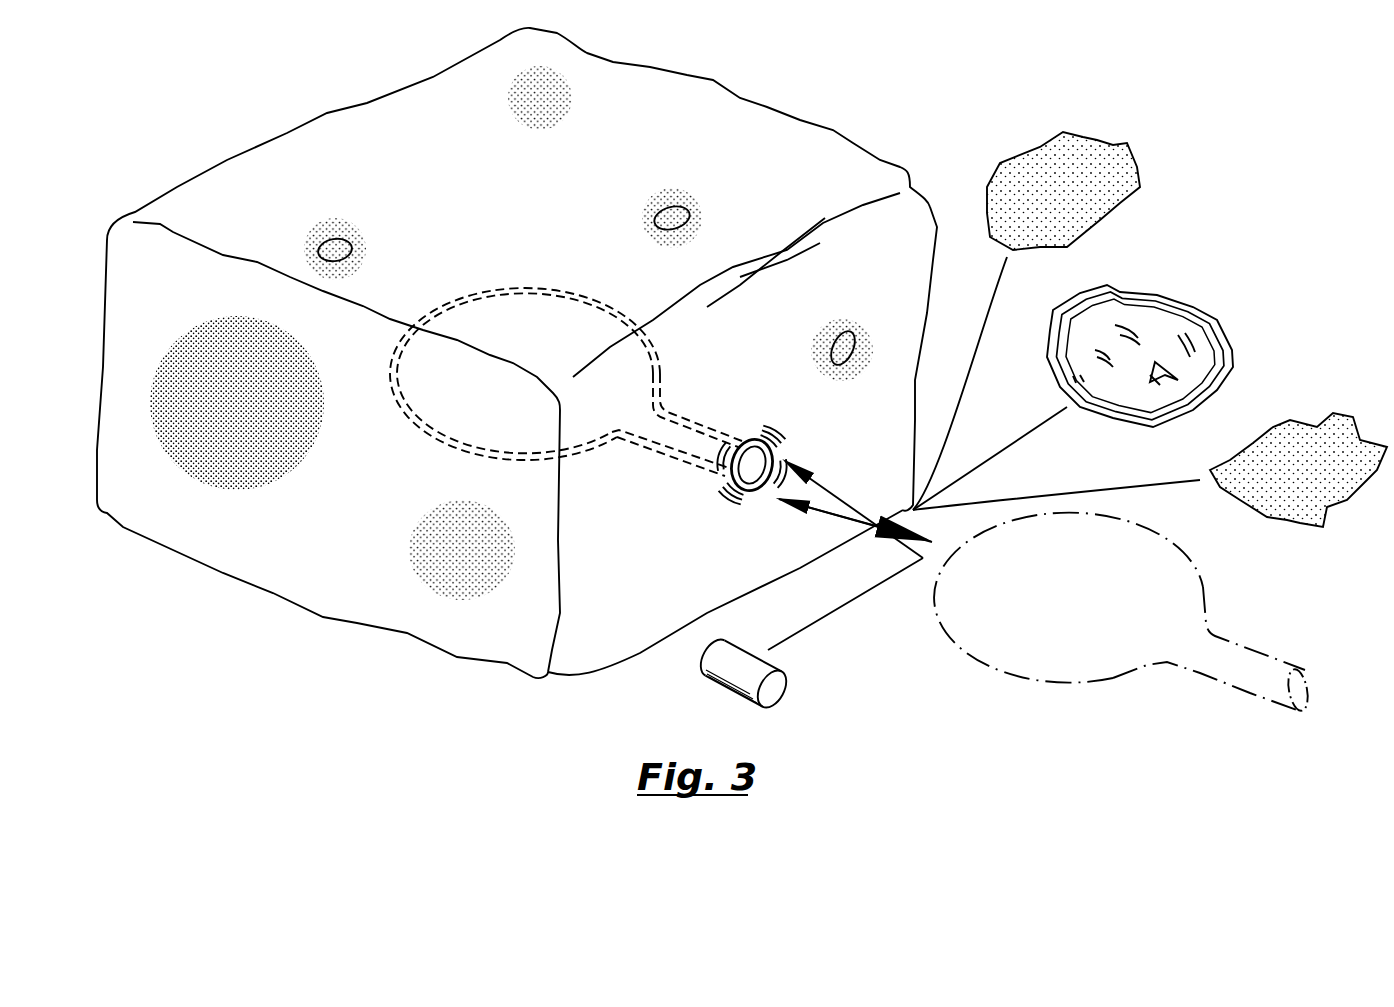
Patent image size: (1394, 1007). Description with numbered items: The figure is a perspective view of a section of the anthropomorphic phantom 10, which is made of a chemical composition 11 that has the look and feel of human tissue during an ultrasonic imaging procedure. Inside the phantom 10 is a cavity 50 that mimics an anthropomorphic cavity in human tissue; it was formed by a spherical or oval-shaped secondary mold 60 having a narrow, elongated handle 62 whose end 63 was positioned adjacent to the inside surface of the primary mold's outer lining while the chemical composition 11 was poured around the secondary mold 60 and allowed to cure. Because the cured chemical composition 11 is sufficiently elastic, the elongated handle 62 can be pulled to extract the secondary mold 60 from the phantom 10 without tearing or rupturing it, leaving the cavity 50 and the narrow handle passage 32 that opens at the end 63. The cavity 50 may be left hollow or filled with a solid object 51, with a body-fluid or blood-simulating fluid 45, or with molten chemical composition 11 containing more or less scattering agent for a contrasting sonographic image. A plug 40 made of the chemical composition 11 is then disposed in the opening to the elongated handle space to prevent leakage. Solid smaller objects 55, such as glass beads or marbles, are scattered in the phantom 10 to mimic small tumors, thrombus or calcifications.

The anthropomorphic phantom 10 is at (803, 76).
The chemical composition 11 is at (1133, 147).
The probe passage 32 is at (700, 470).
The plug 40 is at (737, 684).
The fluid 45 is at (1295, 433).
The cavity 50 is at (527, 288).
The solid object 51 is at (1153, 297).
The smaller objects 55 is at (347, 243).
The secondary mold 60 is at (610, 313).
The elongated handle 62 is at (672, 428).
The end of the elongated handle 63 is at (767, 449).